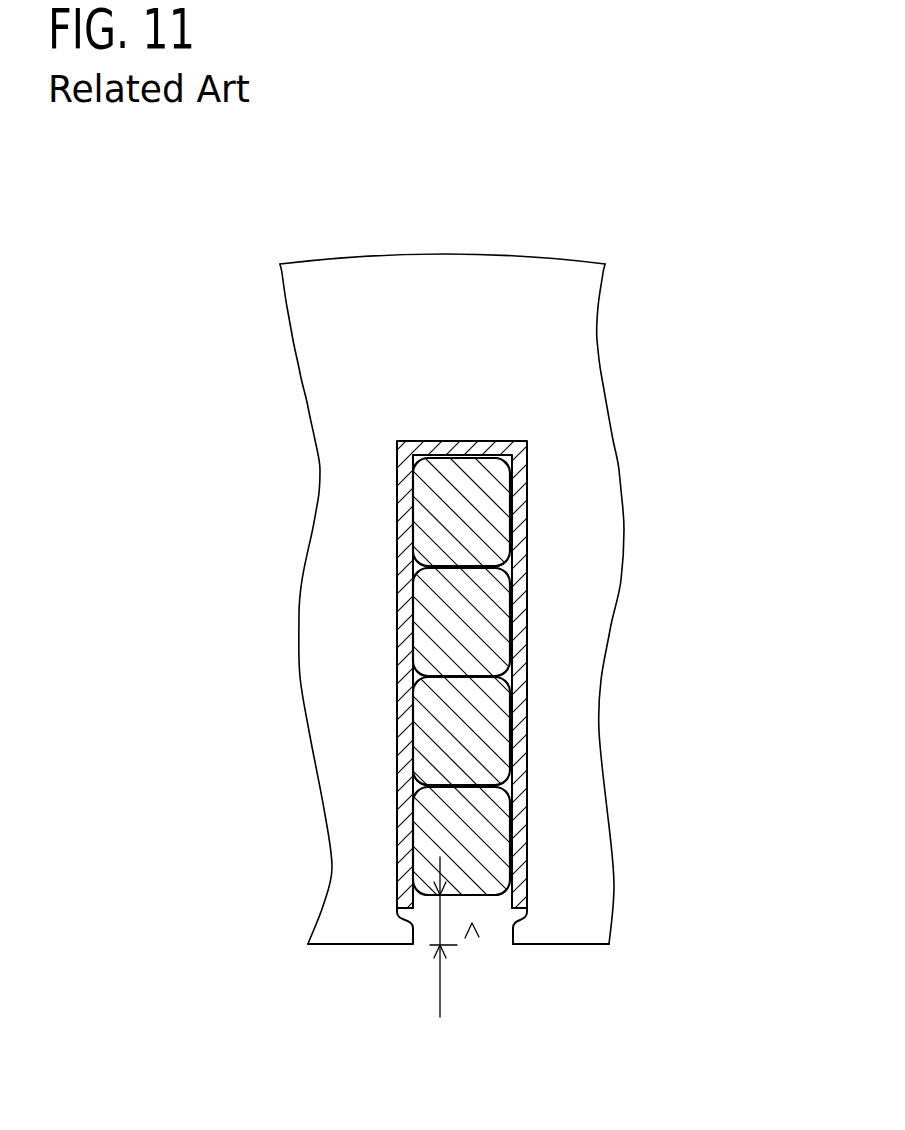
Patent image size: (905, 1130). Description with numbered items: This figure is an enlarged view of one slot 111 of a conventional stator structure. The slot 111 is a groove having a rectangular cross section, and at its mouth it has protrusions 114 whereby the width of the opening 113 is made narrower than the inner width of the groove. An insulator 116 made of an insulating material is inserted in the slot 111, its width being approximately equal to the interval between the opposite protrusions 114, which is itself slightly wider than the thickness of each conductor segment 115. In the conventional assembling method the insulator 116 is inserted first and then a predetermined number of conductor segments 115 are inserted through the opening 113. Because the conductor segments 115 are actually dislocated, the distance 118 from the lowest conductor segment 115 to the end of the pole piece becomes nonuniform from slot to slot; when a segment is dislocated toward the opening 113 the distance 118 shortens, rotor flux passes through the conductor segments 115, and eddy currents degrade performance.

The slot 111 is at (527, 643).
The opening 113 is at (472, 923).
The protrusion 114 is at (513, 933).
The conductor segment 115 is at (423, 537).
The insulator 116 is at (523, 535).
The distance 118 is at (425, 937).